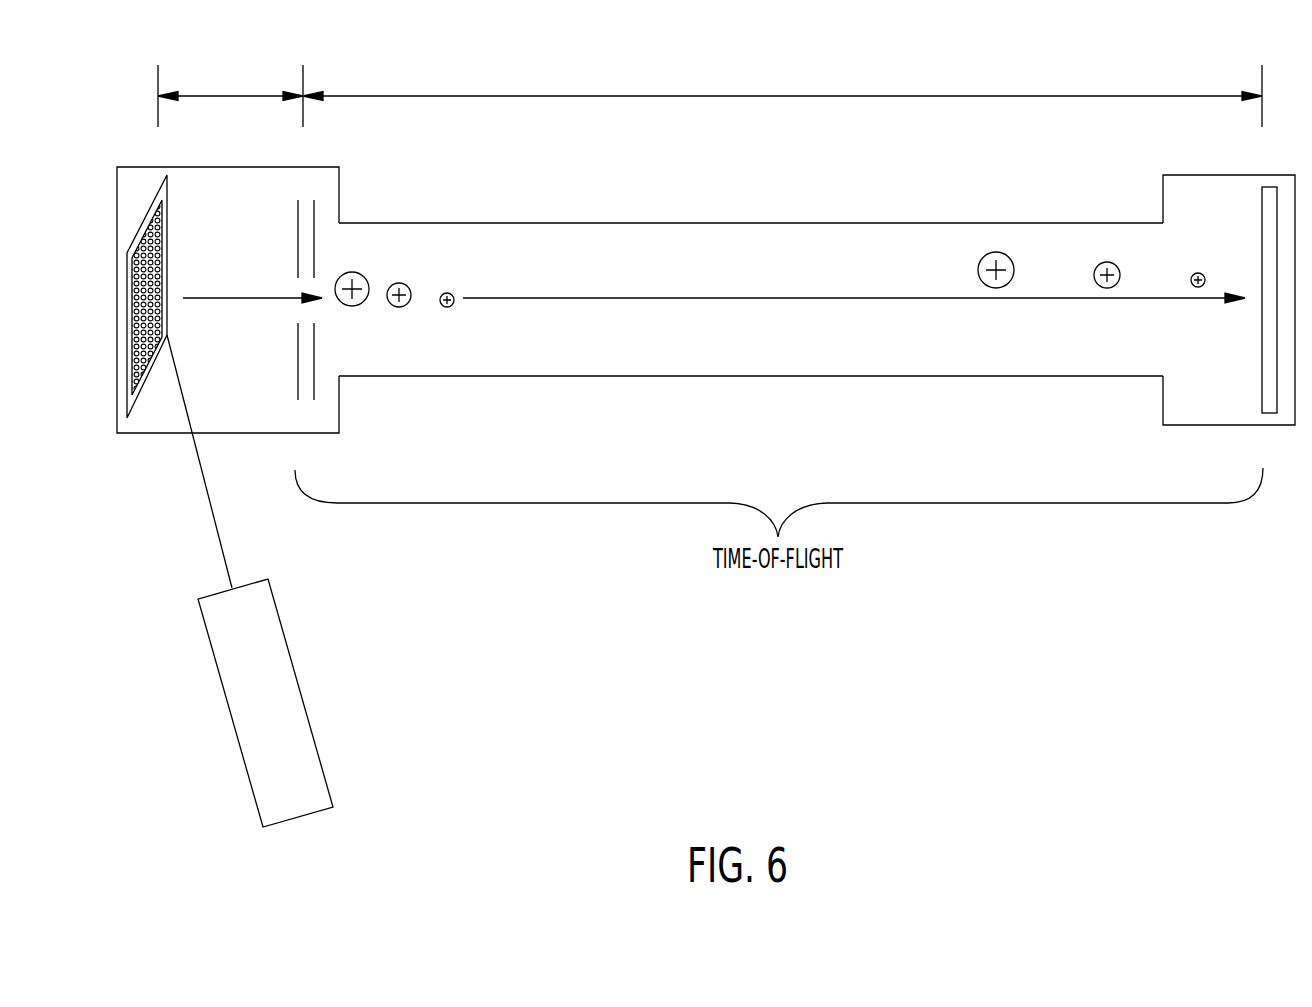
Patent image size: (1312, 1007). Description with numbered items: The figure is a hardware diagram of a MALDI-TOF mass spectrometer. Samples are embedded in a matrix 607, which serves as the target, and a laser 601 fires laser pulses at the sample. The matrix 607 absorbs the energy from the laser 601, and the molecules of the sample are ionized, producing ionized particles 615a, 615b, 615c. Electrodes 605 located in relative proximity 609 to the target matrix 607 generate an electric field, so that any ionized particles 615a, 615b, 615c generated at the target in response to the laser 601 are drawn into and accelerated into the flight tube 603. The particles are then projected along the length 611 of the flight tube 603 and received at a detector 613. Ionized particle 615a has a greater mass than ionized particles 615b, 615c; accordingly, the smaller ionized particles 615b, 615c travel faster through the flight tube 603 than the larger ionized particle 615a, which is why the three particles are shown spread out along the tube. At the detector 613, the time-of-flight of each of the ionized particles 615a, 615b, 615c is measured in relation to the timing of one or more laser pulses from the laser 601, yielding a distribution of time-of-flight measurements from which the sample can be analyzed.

The laser 601 is at (212, 647).
The flight tube 603 is at (641, 376).
The electrodes 605 is at (296, 353).
The matrix 607 is at (168, 203).
The relative proximity 609 is at (232, 92).
The length of flight tube 611 is at (763, 94).
The detector 613 is at (1260, 200).
The ionized particle 615a is at (348, 306).
The ionized particle 615b is at (396, 307).
The ionized particle 615c is at (445, 307).